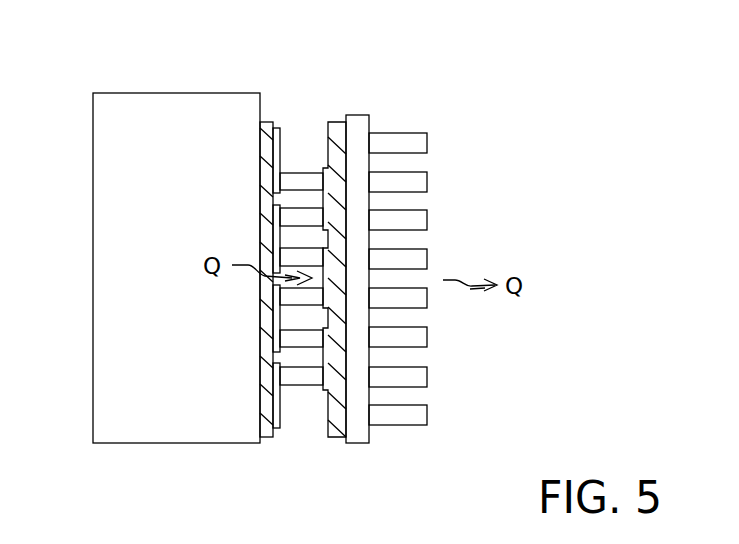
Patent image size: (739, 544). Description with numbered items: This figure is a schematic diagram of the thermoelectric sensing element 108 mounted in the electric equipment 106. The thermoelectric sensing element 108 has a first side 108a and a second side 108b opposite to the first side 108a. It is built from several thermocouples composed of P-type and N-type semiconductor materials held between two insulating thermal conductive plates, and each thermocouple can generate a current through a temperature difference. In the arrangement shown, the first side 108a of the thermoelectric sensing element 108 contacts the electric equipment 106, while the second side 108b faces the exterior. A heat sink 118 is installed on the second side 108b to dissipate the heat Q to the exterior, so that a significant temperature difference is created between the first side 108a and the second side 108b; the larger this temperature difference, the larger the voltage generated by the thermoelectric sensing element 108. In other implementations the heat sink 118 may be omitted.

The electric equipment 106 is at (177, 99).
The thermoelectric sensing element 108 is at (309, 269).
The first side 108a is at (258, 413).
The second side 108b is at (347, 403).
The heat sink 118 is at (370, 433).